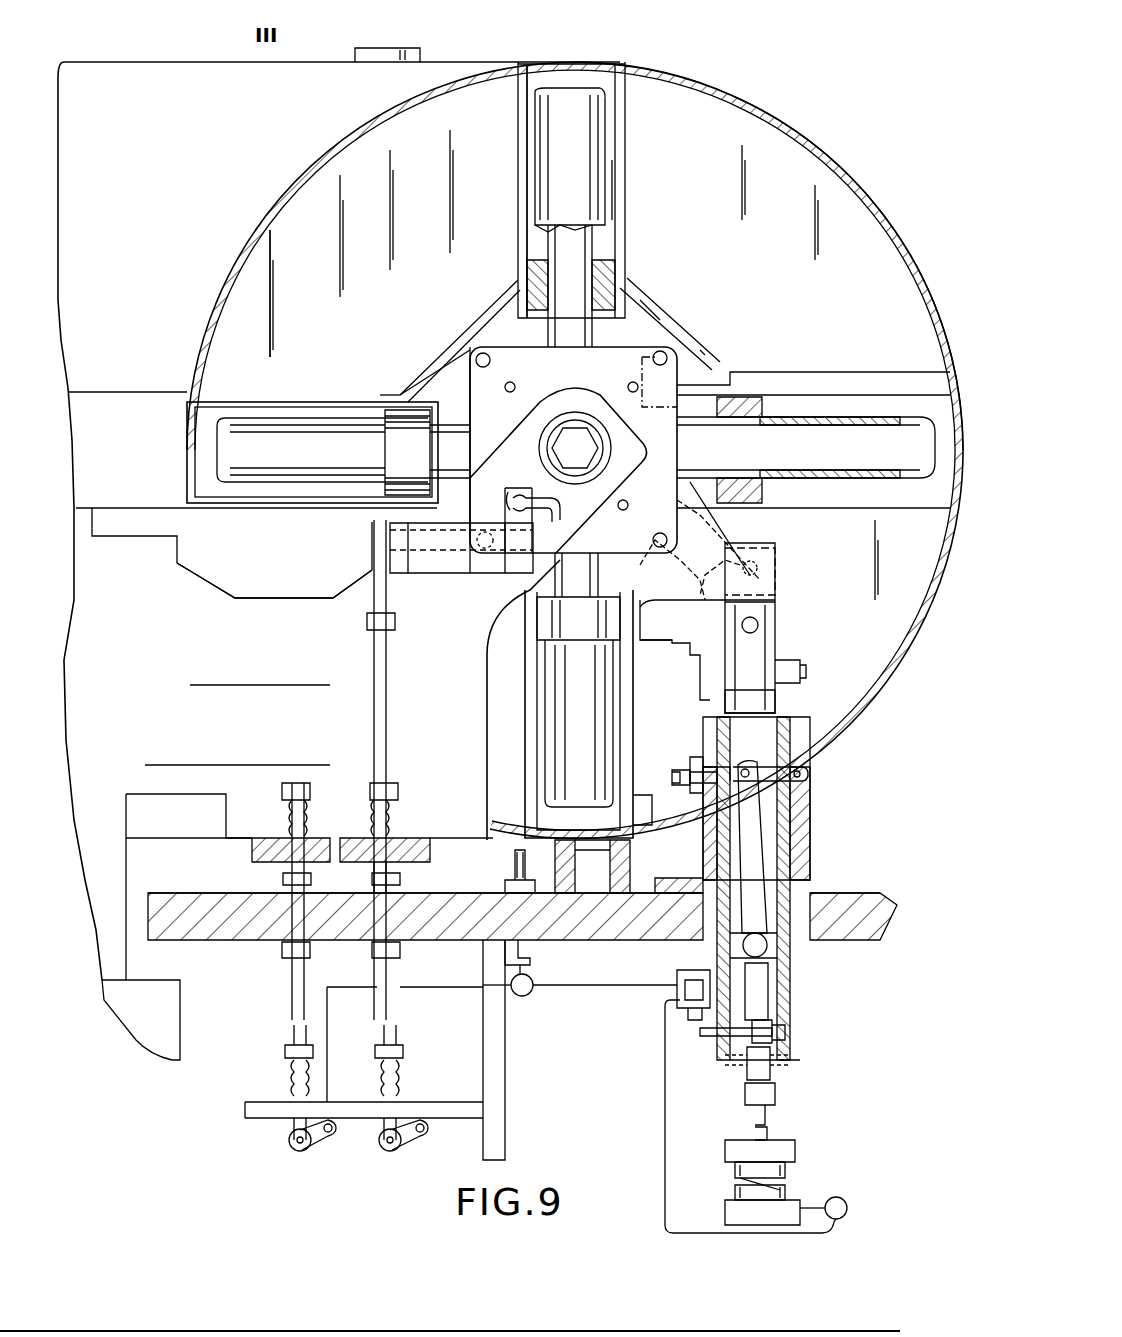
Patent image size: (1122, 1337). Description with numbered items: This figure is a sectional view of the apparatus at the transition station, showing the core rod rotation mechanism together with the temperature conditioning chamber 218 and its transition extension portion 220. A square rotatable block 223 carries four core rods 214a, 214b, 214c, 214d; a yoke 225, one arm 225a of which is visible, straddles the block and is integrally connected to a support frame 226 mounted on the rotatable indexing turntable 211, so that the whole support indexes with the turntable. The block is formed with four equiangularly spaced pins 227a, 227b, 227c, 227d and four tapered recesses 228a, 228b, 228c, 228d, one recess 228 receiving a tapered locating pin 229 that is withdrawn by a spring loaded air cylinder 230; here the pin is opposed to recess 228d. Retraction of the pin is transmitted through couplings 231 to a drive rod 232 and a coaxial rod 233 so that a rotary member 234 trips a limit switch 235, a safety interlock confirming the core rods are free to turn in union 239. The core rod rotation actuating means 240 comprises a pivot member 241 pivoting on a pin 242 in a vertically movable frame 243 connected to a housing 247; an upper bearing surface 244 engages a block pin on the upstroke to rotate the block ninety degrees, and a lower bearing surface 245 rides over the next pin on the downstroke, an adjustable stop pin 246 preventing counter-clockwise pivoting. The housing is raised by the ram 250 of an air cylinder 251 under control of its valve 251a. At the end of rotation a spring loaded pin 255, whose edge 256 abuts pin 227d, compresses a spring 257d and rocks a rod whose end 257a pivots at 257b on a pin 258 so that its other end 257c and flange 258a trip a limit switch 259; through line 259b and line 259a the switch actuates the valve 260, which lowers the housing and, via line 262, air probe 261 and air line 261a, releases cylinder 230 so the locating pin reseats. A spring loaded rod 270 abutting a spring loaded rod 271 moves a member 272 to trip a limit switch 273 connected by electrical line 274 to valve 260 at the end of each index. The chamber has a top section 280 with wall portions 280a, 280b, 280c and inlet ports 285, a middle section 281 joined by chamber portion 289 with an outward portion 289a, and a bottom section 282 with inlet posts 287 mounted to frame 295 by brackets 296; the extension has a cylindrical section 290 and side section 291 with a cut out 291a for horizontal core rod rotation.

The rotatable indexing turntable 211 is at (180, 978).
The core rod 214a is at (733, 440).
The core rod 214b is at (580, 258).
The core rod 214c is at (450, 438).
The core rod 214d is at (560, 600).
The temperature conditioning chamber 218 is at (668, 38).
The transition extension portion 220 is at (782, 100).
The square rotatable block 223 is at (495, 310).
The yoke 225 is at (470, 480).
The arm of yoke 225a is at (470, 430).
The support frame 226 is at (272, 620).
The pin 227a is at (670, 545).
The pin 227b is at (680, 350).
The pin 227c is at (460, 375).
The pin 227d is at (480, 578).
The tapered recess 228 is at (631, 382).
The tapered recess 228a is at (626, 498).
The tapered recess 228b is at (640, 316).
The tapered recess 228c is at (516, 382).
The tapered recess 228d is at (480, 532).
The tapered locating pin 229 is at (512, 496).
The air cylinder 230 is at (545, 478).
The couplings or gearing 231 is at (428, 576).
The drive rod 232 is at (390, 745).
The coaxial rod 233 is at (380, 885).
The rotary member 234 is at (392, 1152).
The limit switch 235 is at (420, 1140).
The union 239 is at (578, 472).
The core rod rotation actuating means 240 is at (836, 614).
The pivot member 241 is at (715, 660).
The pin 242 is at (758, 568).
The vertically movable frame 243 is at (733, 750).
The upper bearing surface 244 is at (740, 600).
The lower bearing surface 245 is at (660, 645).
The adjustable stop pin 246 is at (800, 668).
The housing 247 is at (782, 830).
The ram 250 is at (755, 1095).
The air cylinder 251 is at (735, 1190).
The air cylinder valve 251a is at (845, 1200).
The spring loaded pin 255 is at (694, 757).
The edge of pin 256 is at (672, 777).
The end of rod 257a is at (808, 760).
The pivot point of rod 257b is at (768, 976).
The end of rod 257c is at (785, 1030).
The spring 257d is at (790, 796).
The pin 258 is at (767, 947).
The flange 258a is at (700, 1040).
The limit switch 259 is at (690, 990).
The wire 259a is at (665, 1068).
The line 259b is at (586, 988).
The valve 260 is at (528, 996).
The air probe 261 is at (530, 950).
The air line 261a is at (512, 866).
The line 262 is at (522, 972).
The spring loaded rod 270 is at (290, 870).
The spring loaded rod 271 is at (293, 1030).
The member 272 is at (292, 1148).
The limit switch 273 is at (328, 1140).
The electrical line 274 is at (430, 995).
The top section 280 is at (512, 130).
The wall portion 280a is at (540, 62).
The wall portion 280b is at (527, 172).
The wall portion 280c is at (625, 155).
The middle section 281 is at (185, 400).
The bottom section 282 is at (633, 720).
The temperature controlled air inlet ports 285 is at (418, 50).
The air inlet posts 287 is at (648, 812).
The chamber portion 289 is at (410, 390).
The second portion 289a is at (655, 296).
The cylindrical section 290 is at (885, 250).
The side section 291 is at (318, 190).
The cut out portion 291a is at (845, 390).
The frame 295 is at (885, 905).
The brackets 296 is at (640, 880).